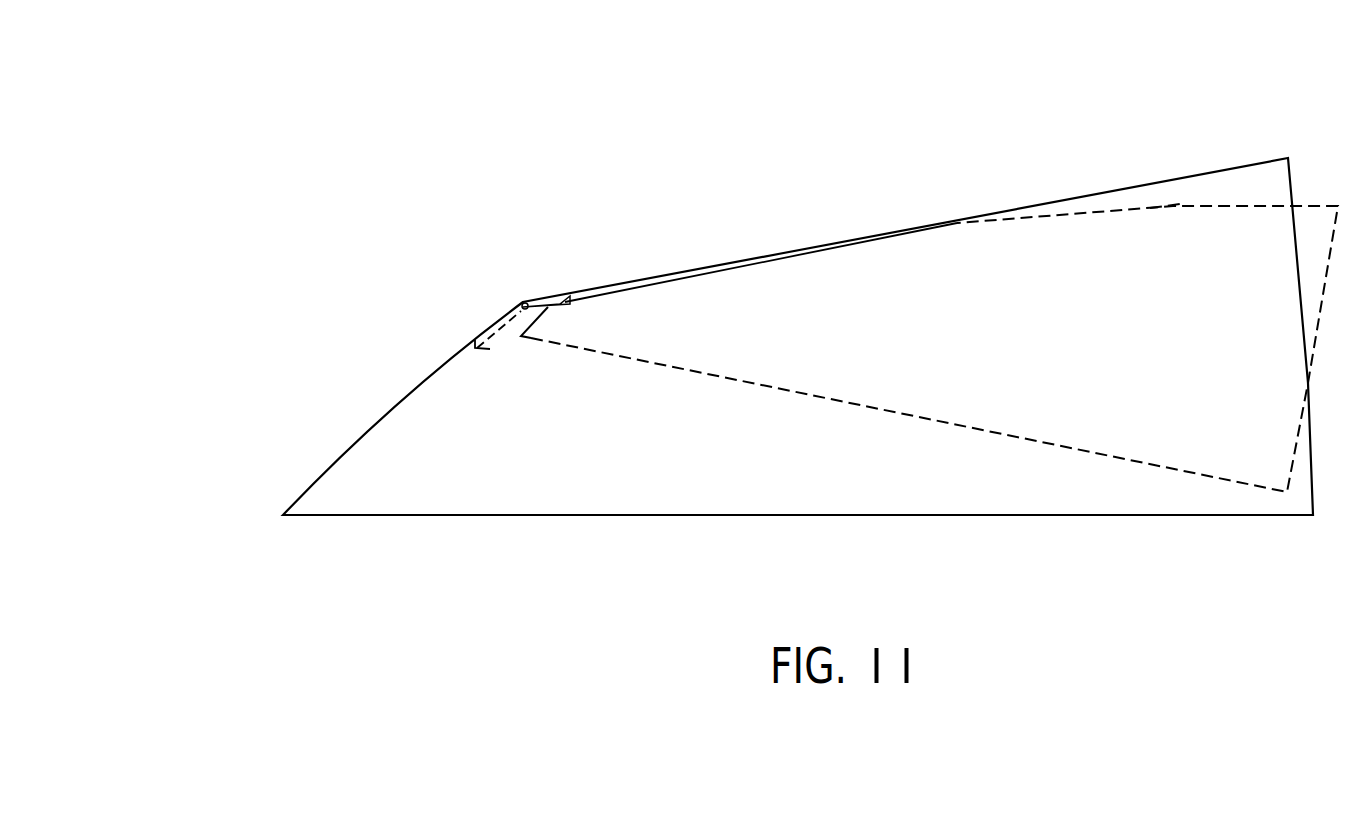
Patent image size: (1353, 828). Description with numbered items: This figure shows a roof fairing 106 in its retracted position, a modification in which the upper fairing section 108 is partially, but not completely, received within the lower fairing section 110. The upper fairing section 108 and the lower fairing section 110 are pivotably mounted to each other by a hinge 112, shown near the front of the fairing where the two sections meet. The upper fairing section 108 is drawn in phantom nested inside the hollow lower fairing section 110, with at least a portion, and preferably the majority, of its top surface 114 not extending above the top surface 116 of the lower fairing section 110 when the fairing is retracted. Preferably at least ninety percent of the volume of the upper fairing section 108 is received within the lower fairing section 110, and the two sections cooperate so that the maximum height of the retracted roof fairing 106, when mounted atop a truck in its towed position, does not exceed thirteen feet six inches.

The roof fairing 106 is at (246, 492).
The upper fairing section 108 is at (1073, 351).
The lower fairing section 110 is at (560, 480).
The hinge 112 is at (480, 338).
The top surface of the upper fairing section 114 is at (1167, 200).
The top surface of the lower fairing section 116 is at (807, 247).